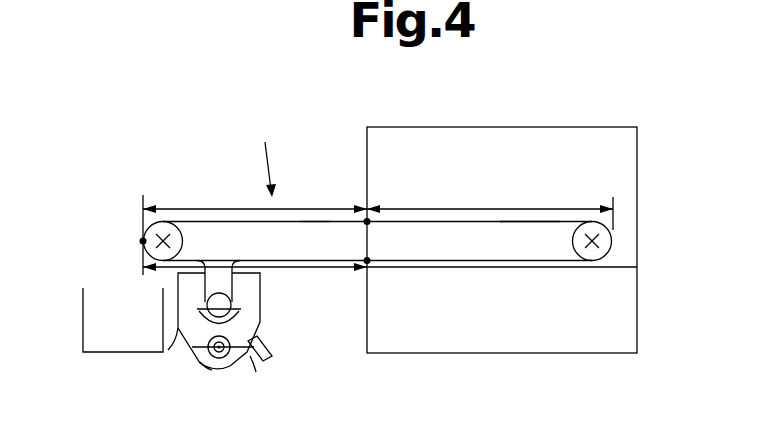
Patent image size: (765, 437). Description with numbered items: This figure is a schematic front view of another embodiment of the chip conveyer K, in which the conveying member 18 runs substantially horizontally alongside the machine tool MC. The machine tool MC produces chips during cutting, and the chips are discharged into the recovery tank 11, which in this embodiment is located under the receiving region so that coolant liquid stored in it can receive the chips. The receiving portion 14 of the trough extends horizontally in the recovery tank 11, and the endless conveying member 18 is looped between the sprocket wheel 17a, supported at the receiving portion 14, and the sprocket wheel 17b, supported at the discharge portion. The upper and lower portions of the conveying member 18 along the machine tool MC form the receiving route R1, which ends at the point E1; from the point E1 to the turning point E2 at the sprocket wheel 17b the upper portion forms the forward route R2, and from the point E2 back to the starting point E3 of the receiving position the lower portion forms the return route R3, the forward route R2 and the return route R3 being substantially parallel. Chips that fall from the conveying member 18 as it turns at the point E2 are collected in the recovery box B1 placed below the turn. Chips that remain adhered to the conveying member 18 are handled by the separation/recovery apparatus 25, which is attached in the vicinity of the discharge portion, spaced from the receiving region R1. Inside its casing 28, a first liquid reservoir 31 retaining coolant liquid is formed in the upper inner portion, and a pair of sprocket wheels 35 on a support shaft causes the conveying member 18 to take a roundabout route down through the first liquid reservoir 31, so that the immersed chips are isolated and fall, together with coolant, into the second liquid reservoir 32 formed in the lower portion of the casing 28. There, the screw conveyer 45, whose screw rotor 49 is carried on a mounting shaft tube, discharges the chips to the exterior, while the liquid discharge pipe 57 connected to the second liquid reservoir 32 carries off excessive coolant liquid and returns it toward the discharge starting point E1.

The sprocket wheel 17b is at (170, 220).
The sprocket wheel 17a is at (612, 241).
The machine tool MC is at (638, 147).
The recovery tank 11 is at (648, 296).
The forward route R2 is at (233, 219).
The receiving route R1 is at (460, 209).
The return route R3 is at (276, 302).
The chip conveyer K is at (266, 154).
The conveying member 18 is at (300, 219).
The receiving portion 14 is at (530, 212).
The point E1 is at (367, 222).
The point E2 is at (143, 241).
The starting point E3 is at (367, 261).
The recovery box B1 is at (83, 315).
The casing 28 is at (262, 336).
The first liquid reservoir 31 is at (182, 356).
The sprocket wheel 35 is at (244, 316).
The second liquid reservoir 32 is at (214, 370).
The screw rotor 49 is at (238, 366).
The separation/recovery apparatus 25 is at (266, 346).
The liquid discharge pipe 57 is at (252, 360).
The screw conveyer 45 is at (195, 372).